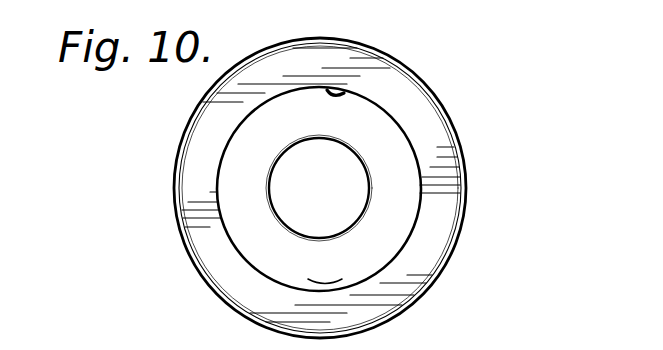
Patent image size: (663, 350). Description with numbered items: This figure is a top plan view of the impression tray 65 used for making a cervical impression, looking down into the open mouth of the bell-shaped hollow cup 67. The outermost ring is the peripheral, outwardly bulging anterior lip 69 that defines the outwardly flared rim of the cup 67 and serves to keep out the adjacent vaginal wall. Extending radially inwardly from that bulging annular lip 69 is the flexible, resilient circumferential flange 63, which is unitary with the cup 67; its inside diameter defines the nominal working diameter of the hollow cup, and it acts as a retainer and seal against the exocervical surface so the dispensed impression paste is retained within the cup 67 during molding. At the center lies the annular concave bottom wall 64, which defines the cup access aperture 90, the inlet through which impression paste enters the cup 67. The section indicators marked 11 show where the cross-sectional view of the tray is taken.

The circumferential flange 63 is at (342, 93).
The annular bottom wall 64 is at (319, 189).
The impression tray 65 is at (442, 298).
The hollow cup 67 is at (218, 290).
The anterior lip 69 is at (440, 104).
The cup access aperture 90 is at (276, 204).
The section line FIG. 11 is at (142, 143).